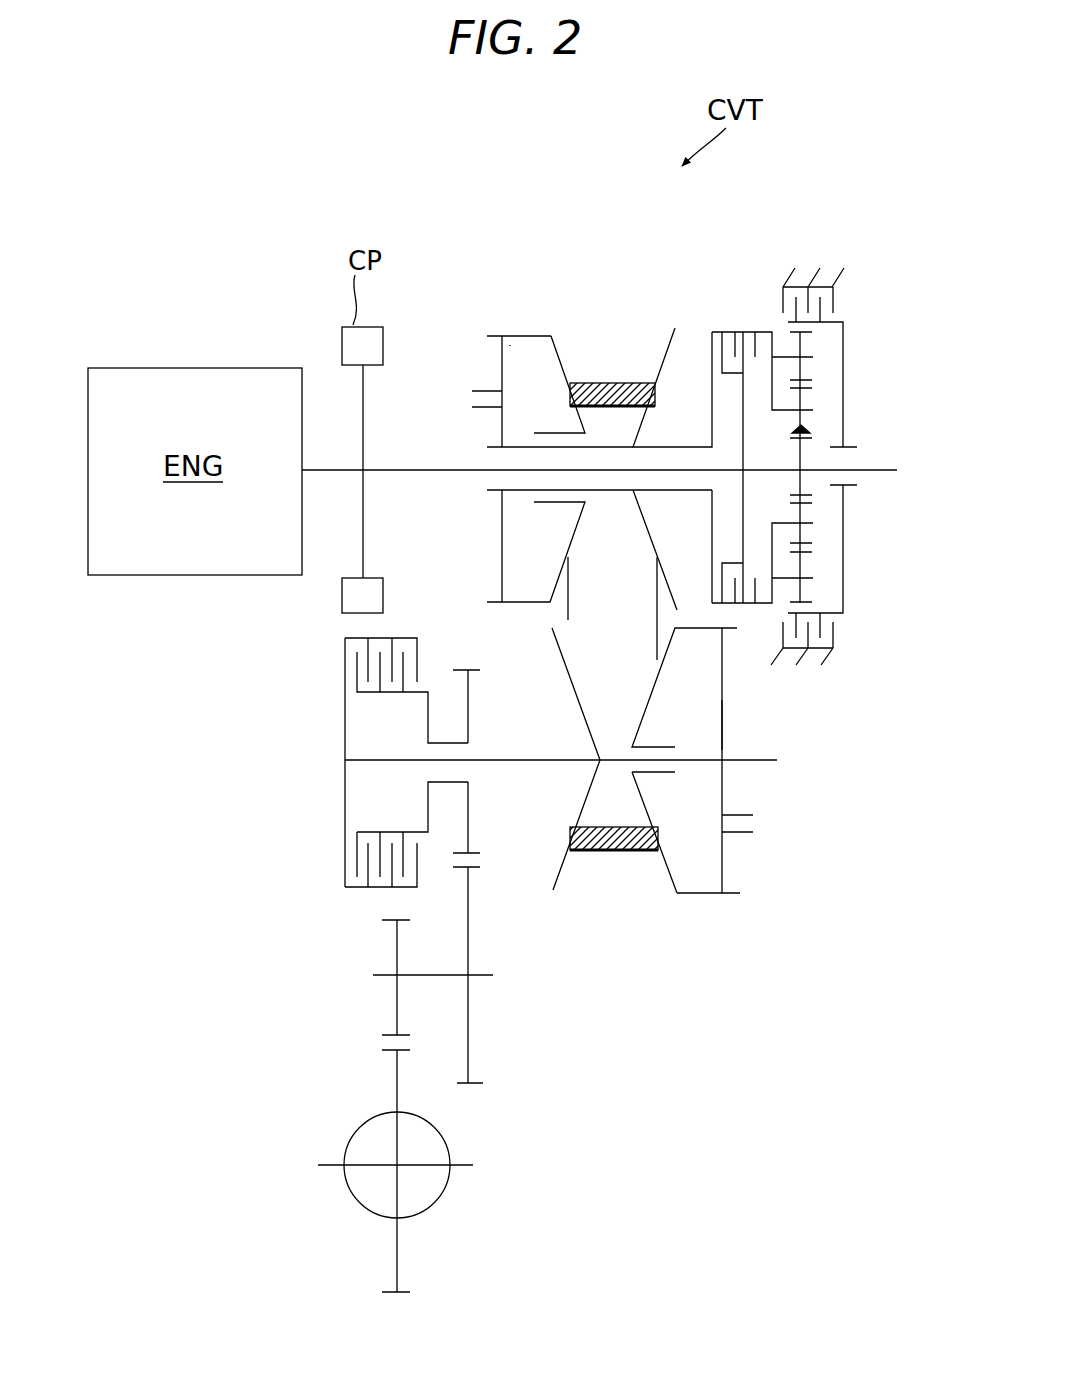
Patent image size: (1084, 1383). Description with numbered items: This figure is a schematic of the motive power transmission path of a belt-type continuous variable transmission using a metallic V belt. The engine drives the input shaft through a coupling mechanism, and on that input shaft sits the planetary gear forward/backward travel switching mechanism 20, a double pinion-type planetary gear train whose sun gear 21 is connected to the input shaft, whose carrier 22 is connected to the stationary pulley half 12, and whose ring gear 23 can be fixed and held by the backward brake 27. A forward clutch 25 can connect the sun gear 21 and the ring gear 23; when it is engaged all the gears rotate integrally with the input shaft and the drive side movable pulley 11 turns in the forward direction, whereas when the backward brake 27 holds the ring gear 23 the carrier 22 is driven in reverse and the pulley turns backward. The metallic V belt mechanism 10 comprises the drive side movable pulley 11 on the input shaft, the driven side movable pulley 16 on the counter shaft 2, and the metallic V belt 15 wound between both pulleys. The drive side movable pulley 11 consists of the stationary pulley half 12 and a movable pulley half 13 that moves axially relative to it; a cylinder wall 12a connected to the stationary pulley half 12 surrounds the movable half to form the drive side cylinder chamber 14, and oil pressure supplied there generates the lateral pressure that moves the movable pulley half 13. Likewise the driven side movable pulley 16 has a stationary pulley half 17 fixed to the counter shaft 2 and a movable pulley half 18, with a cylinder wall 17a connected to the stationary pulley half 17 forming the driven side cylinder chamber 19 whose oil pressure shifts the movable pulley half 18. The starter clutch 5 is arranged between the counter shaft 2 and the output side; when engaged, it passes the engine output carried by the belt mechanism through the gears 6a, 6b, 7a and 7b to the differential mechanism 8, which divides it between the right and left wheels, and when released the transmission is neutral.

The counter shaft 2 is at (522, 762).
The starter clutch 5 is at (340, 859).
The gear 6a is at (468, 690).
The gear 6b is at (480, 1085).
The gear 7a is at (397, 942).
The gear 7b is at (397, 1078).
The differential mechanism 8 is at (440, 1200).
The metallic V belt mechanism 10 is at (570, 245).
The drive side movable pulley 11 is at (518, 325).
The stationary pulley half 12 is at (662, 337).
The cylinder wall 12a is at (502, 430).
The movable pulley half 13 is at (562, 350).
The drive side cylinder chamber 14 is at (552, 415).
The metallic V belt 15 is at (568, 617).
The driven side movable pulley 16 is at (668, 908).
The stationary pulley half 17 is at (554, 892).
The cylinder wall 17a is at (722, 725).
The movable pulley half 18 is at (668, 878).
The driven side cylinder chamber 19 is at (697, 718).
The planetary gear forward/backward travel switching mechanism 20 is at (870, 265).
The sun gear 21 is at (800, 453).
The carrier 22 is at (773, 372).
The ring gear 23 is at (842, 322).
The forward clutch 25 is at (733, 332).
The backward brake 27 is at (835, 297).